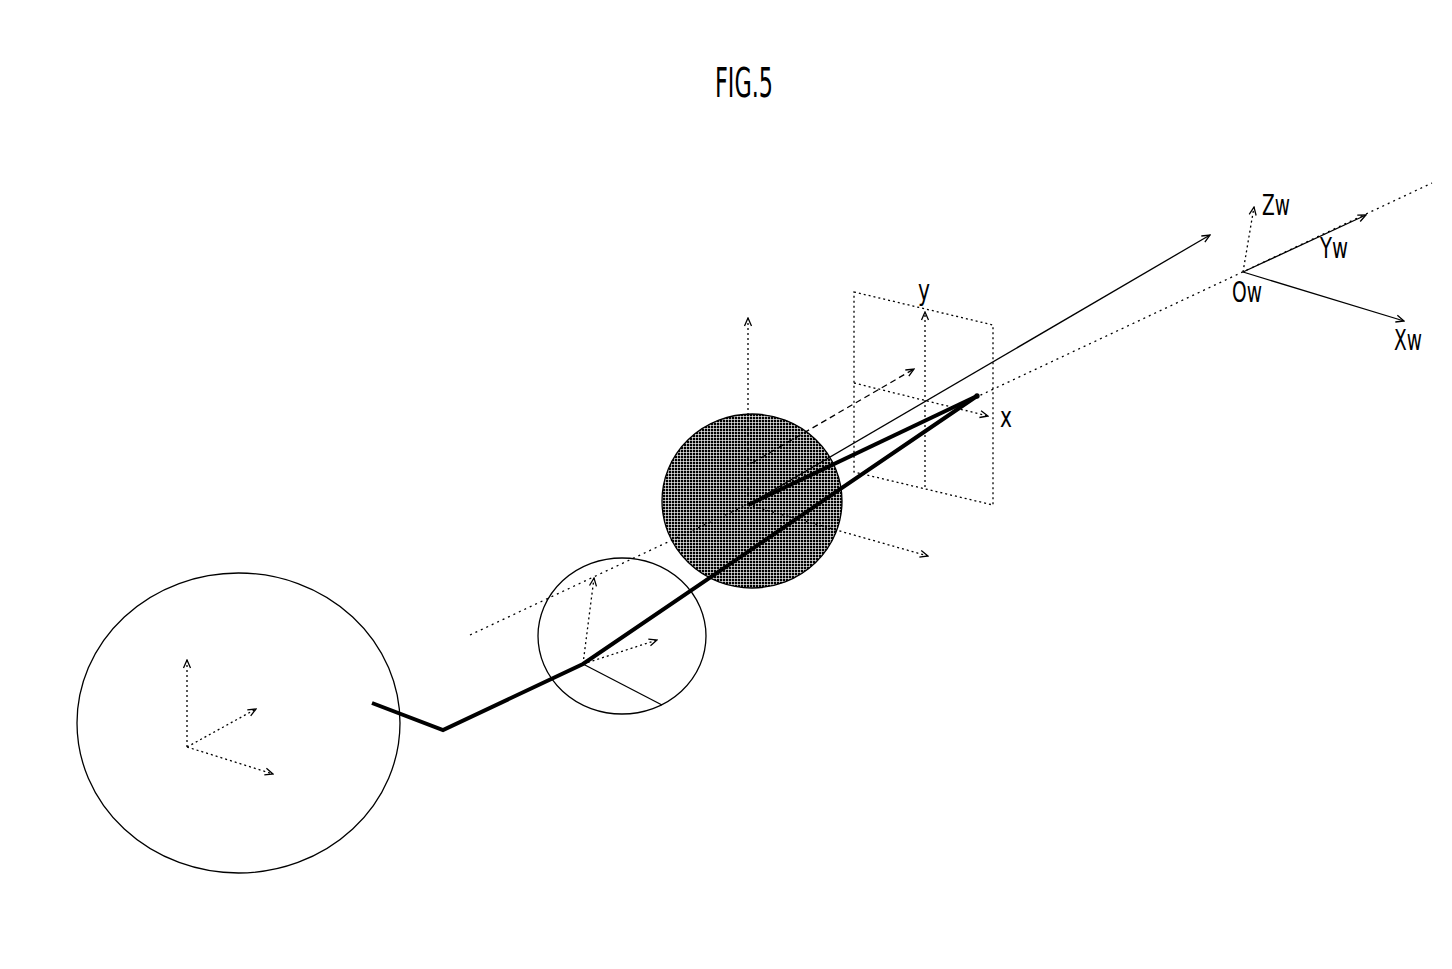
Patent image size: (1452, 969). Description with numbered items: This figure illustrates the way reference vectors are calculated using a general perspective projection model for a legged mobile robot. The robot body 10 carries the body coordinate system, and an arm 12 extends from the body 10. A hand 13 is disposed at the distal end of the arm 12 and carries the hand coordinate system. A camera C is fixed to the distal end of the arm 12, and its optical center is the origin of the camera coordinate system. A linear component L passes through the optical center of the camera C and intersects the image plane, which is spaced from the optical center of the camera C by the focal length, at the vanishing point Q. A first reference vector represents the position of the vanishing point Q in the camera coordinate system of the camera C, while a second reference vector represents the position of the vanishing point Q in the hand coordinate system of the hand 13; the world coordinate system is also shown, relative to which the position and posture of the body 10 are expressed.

The body 10 is at (134, 607).
The arm 12 is at (508, 703).
The hand 13 is at (565, 578).
The camera C is at (697, 436).
The linear component L is at (1063, 356).
The vanishing point Q is at (993, 403).